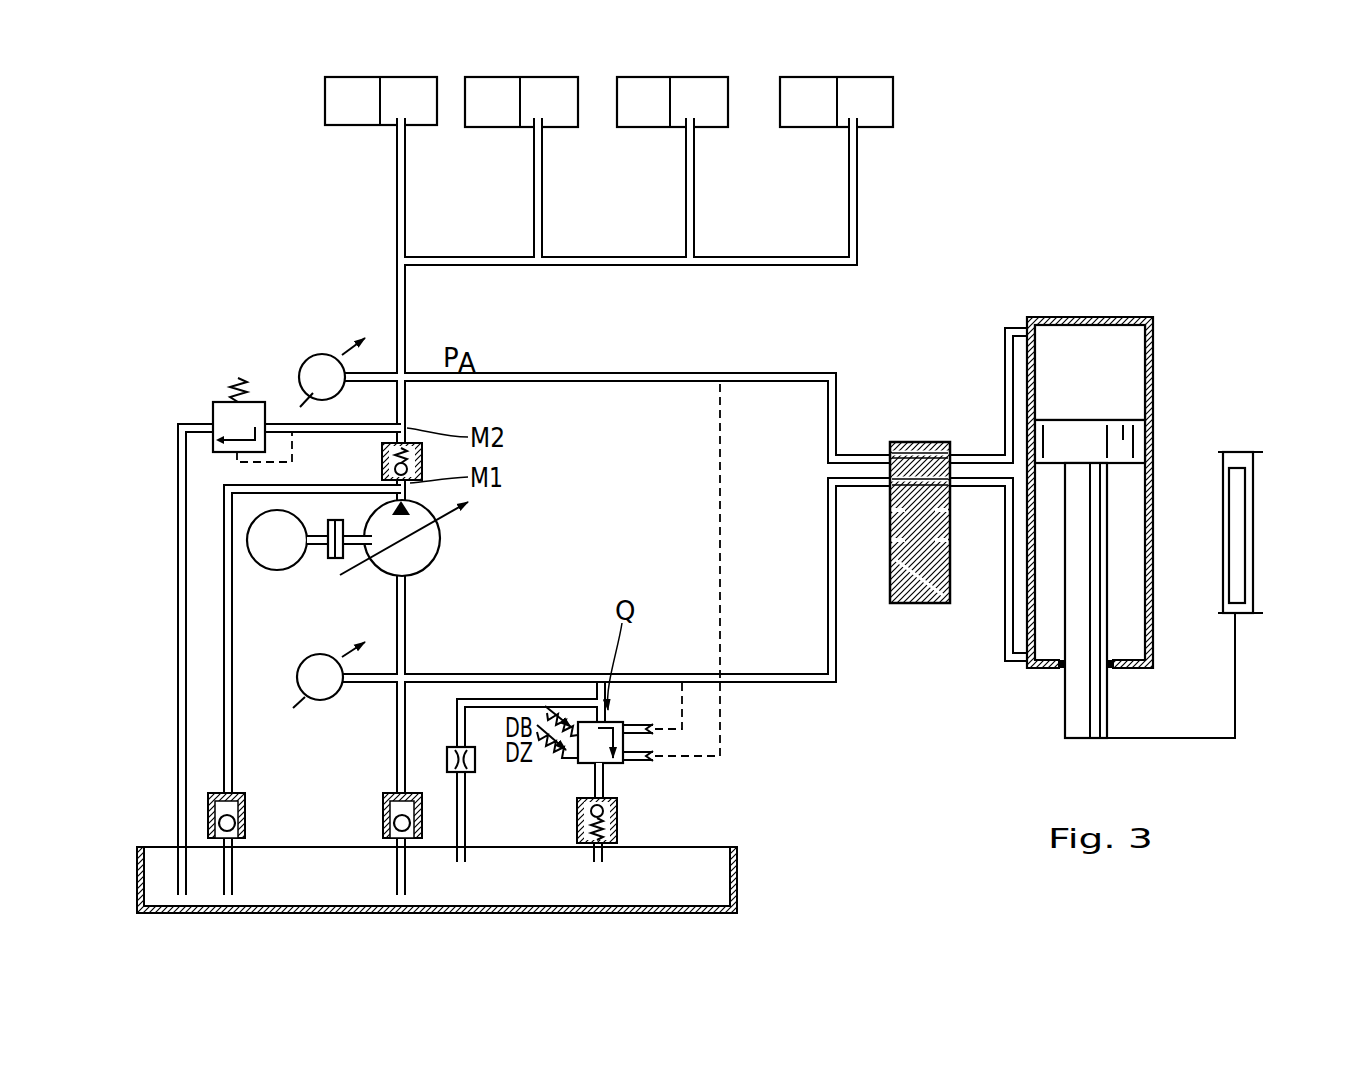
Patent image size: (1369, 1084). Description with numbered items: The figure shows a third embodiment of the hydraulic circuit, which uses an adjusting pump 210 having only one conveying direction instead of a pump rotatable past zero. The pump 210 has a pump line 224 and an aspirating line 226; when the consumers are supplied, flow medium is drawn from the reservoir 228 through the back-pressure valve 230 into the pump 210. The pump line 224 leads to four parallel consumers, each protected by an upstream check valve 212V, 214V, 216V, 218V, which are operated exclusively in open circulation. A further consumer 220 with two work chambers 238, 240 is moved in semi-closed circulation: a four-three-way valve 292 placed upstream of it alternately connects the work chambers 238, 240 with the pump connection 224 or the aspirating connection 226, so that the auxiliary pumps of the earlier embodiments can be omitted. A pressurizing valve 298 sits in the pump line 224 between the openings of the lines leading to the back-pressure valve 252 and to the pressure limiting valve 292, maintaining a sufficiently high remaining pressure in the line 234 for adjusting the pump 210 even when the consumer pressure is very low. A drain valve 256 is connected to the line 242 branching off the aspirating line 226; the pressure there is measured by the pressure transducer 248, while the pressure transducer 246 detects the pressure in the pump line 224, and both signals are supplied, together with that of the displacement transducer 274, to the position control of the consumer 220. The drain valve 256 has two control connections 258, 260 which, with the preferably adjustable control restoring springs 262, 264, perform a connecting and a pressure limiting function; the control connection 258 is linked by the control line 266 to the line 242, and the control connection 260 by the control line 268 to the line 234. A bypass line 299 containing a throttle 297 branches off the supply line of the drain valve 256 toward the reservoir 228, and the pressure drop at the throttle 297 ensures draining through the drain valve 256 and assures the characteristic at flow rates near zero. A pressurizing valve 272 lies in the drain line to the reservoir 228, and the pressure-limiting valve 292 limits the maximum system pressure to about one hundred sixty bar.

The adjusting pump 210 is at (443, 540).
The check valve 212V is at (348, 110).
The check valve 214V is at (498, 110).
The check valve 216V is at (647, 110).
The check valve 218V is at (803, 110).
The consumer 220 is at (1147, 504).
The pump line 224 is at (407, 408).
The aspirating line 226 is at (407, 633).
The reservoir 228 is at (702, 883).
The back-pressure valve 230 is at (383, 820).
The line 234 is at (674, 372).
The work chamber 238 is at (1095, 395).
The work chamber 240 is at (1122, 578).
The line 242 is at (517, 680).
The pressure transducer 246 is at (320, 353).
The pressure transducer 248 is at (323, 700).
The back-pressure valve 252 is at (247, 805).
The drain valve 256 is at (618, 712).
The control connection 258 is at (660, 735).
The control connection 260 is at (640, 765).
The control restoring spring 262 is at (563, 712).
The control restoring spring 264 is at (563, 753).
The control line 266 is at (687, 707).
The control line 268 is at (723, 503).
The pressurizing valve 272 is at (620, 822).
The displacement transducer 274 is at (1250, 553).
The 4/3-way valve 292 is at (210, 405).
The throttle 297 is at (477, 777).
The pressurizing valve 298 is at (382, 458).
The bypass line 299 is at (480, 700).